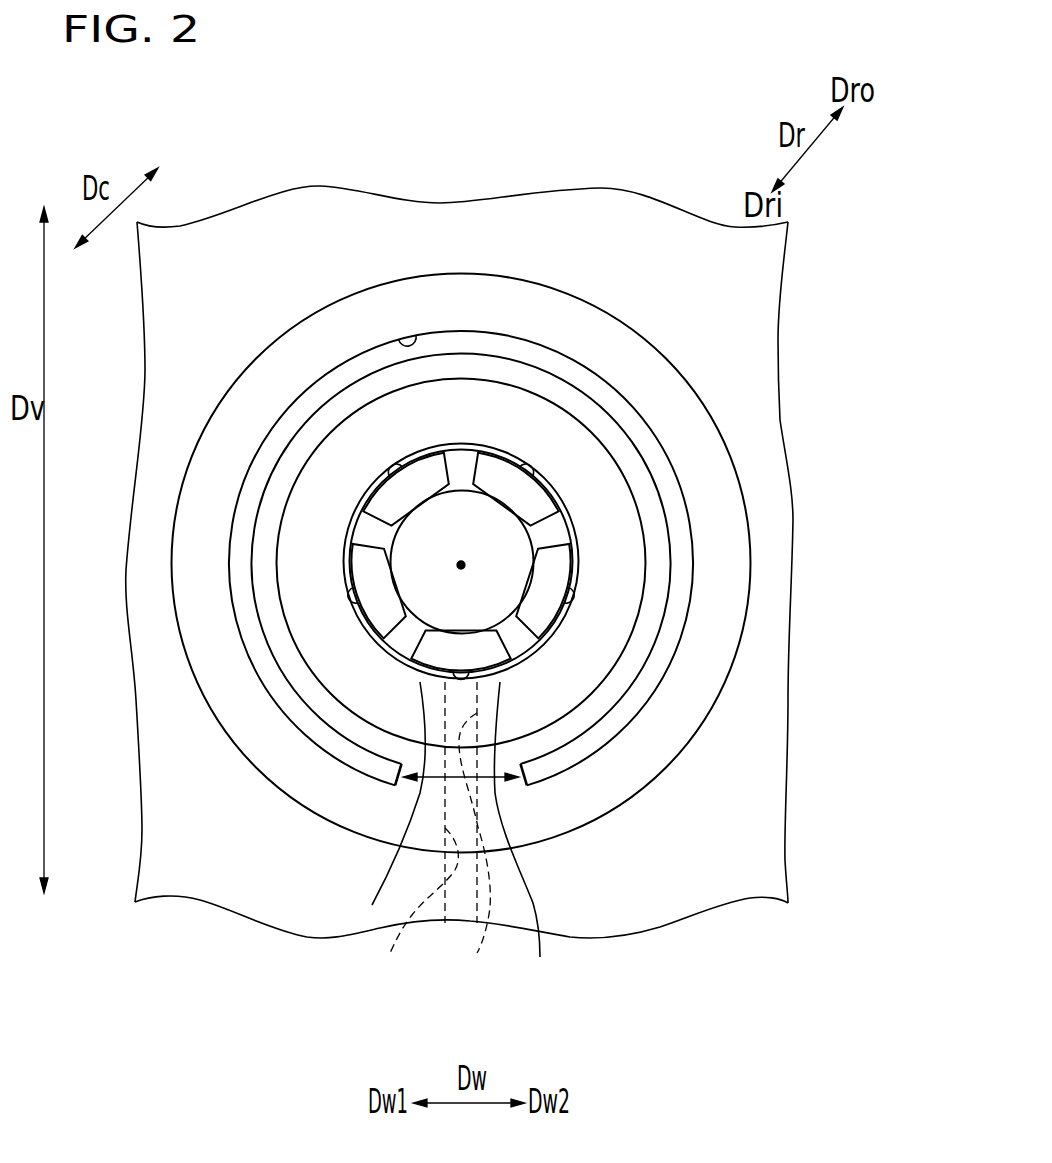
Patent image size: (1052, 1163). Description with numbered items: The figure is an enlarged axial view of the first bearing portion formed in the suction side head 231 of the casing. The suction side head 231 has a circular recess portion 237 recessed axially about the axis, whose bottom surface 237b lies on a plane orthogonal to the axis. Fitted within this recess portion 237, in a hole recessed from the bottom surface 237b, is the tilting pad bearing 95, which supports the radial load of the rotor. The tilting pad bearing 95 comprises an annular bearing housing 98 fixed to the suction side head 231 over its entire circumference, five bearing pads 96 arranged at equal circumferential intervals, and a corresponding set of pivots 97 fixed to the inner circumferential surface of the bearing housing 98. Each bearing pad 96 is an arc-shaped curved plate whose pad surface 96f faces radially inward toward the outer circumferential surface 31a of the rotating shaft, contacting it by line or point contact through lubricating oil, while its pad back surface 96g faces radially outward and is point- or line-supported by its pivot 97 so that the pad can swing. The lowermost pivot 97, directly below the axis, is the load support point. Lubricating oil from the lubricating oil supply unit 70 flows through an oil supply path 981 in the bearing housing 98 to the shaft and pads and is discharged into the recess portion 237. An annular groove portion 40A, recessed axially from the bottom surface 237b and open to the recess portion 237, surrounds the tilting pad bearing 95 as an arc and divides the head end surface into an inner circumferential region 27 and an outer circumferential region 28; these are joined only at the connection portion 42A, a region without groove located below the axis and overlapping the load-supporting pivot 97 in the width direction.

The suction side head 231 is at (212, 247).
The recess portion 237 is at (703, 740).
The bottom surface 237b is at (632, 778).
The outer circumferential region 28 is at (208, 520).
The inner circumferential region 27 is at (316, 606).
The bearing housing 98 is at (317, 652).
The tilting pad bearing 95 is at (640, 494).
The annular groove portion 40A is at (412, 340).
The rotor hub (shaft hole) 31a is at (513, 547).
The bearing pad 96 is at (378, 507).
The pivot 97 is at (392, 470).
The pad surface 96f is at (452, 633).
The pad back surface 96g is at (372, 905).
The connection portion 42A is at (540, 957).
The lubricating oil supply unit 70 is at (400, 935).
The oil supply path 981 is at (478, 940).